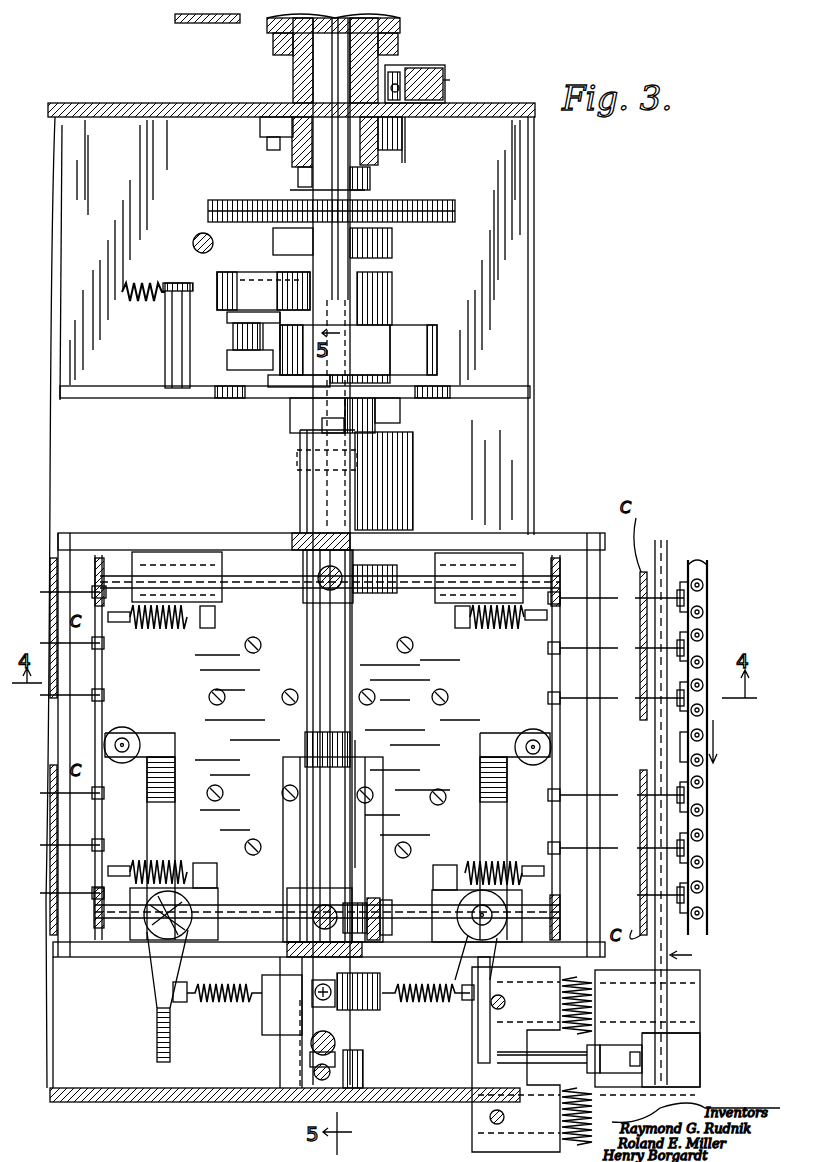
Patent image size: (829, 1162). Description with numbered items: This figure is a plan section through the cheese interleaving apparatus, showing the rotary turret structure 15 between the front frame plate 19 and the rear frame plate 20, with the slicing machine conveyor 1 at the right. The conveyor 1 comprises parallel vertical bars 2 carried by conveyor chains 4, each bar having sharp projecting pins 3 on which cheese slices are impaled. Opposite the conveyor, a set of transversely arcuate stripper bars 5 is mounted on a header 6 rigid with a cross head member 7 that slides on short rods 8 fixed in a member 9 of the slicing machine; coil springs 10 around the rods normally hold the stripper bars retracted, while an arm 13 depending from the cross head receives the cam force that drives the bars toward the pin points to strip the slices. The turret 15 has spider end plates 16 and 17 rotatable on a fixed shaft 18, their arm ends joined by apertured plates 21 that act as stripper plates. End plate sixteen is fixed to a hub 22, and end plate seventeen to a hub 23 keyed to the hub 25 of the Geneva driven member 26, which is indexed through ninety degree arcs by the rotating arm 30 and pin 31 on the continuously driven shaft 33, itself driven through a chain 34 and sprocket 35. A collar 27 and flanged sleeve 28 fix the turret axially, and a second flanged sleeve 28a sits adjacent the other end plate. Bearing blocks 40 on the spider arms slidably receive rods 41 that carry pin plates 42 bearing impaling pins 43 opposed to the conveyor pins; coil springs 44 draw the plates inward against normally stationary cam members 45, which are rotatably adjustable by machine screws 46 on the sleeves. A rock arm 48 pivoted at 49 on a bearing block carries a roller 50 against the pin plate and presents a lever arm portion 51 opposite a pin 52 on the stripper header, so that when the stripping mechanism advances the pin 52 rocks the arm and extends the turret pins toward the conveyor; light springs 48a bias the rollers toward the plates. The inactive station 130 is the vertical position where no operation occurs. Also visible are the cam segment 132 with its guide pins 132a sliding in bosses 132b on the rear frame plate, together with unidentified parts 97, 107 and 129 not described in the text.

The conveyor 1 is at (720, 556).
The conveyor bars 2 is at (725, 913).
The pins 3 is at (682, 595).
The conveyor chains 4 is at (703, 578).
The stripper bars 5 is at (658, 540).
The header 6 is at (700, 1047).
The cross head member 7 is at (695, 1032).
The short rods 8 is at (703, 992).
The member 9 is at (472, 1115).
The coil springs 10 is at (560, 1003).
The arm 13 is at (582, 1040).
The turret structure 15 is at (562, 533).
The end plate 16 is at (100, 957).
The end plate 17 is at (125, 530).
The shaft 18 is at (295, 78).
The front frame plate 19 is at (118, 1085).
The rear frame plate 20 is at (478, 117).
The plates 21 is at (72, 535).
The hub 22 is at (287, 1015).
The hub 23 is at (413, 462).
The hub 25 is at (405, 415).
The driven member 26 is at (440, 365).
The collar 27 is at (358, 1025).
The sleeve 28 is at (355, 868).
The flanged sleeve 28a is at (350, 612).
The rotating arm 30 is at (255, 285).
The pin 31 is at (230, 323).
The shaft 33 is at (300, 265).
The chain 34 is at (450, 196).
The sprocket 35 is at (392, 245).
The bearing blocks 40 is at (490, 553).
The rods 41 is at (125, 575).
The pin plates 42 is at (102, 672).
The impaling pins 43 is at (362, 734).
The coil springs 44 is at (170, 615).
The cam members 45 is at (385, 565).
The machine screws 46 is at (272, 893).
The rock arm 48 is at (152, 812).
The light springs 48a is at (232, 1003).
The pivot 49 is at (160, 962).
The roller 50 is at (150, 720).
The lever arm portion 51 is at (172, 1050).
The pin 52 is at (512, 1052).
The bar 97 is at (176, 20).
The pin 107 is at (197, 236).
The roller 129 is at (340, 1043).
The inactive station 130 is at (50, 565).
The cam segment 132 is at (442, 66).
The guide pins 132a is at (400, 70).
The bosses 132b is at (450, 80).